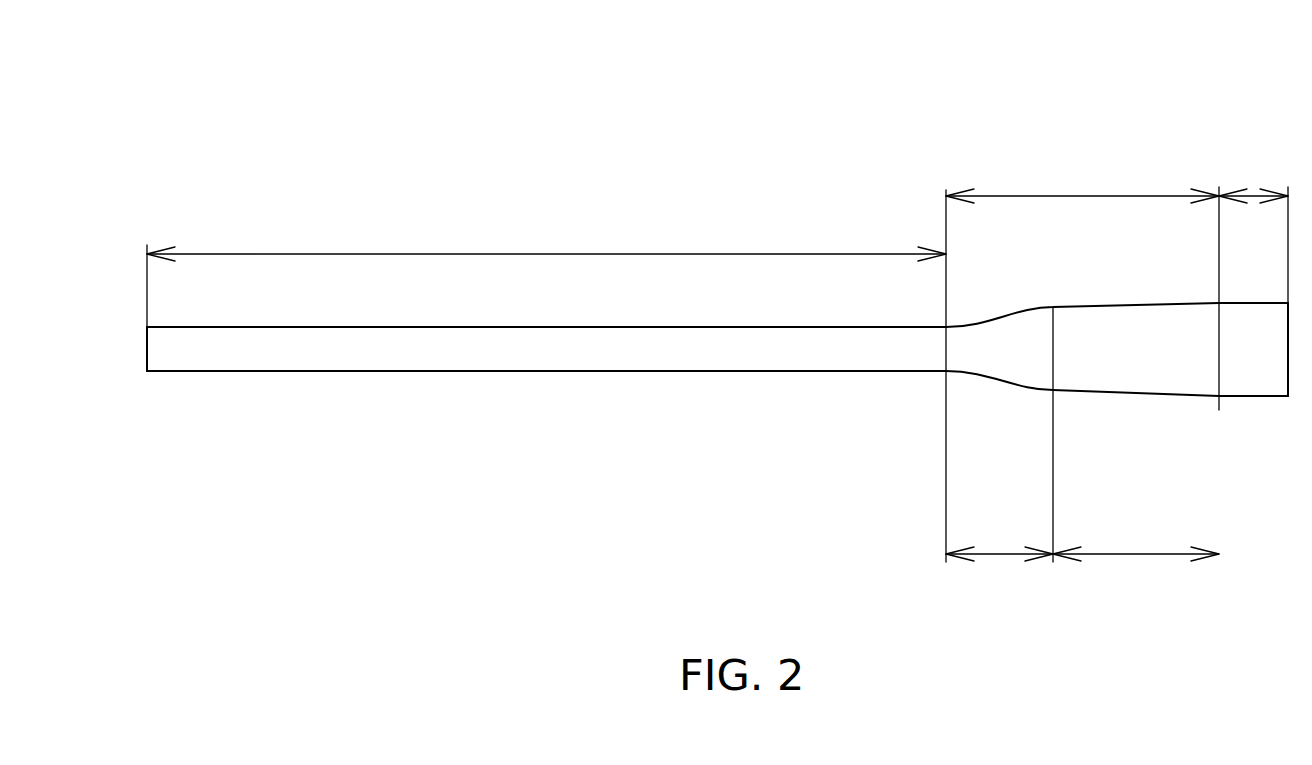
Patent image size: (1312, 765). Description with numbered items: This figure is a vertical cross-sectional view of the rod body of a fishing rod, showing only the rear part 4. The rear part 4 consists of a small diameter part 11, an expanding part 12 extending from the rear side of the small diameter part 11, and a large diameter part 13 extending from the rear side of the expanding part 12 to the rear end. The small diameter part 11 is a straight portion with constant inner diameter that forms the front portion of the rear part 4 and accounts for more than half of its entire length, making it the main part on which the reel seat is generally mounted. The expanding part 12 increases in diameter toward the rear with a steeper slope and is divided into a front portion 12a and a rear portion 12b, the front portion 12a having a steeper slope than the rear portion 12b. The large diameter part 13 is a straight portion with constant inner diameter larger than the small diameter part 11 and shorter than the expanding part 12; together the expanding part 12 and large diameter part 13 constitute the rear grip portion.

The rear part 4 is at (786, 190).
The small diameter part 11 is at (544, 253).
The expanding part 12 is at (1080, 195).
The large diameter part 13 is at (1252, 195).
The front portion 12a is at (992, 552).
The rear portion 12b is at (1136, 552).